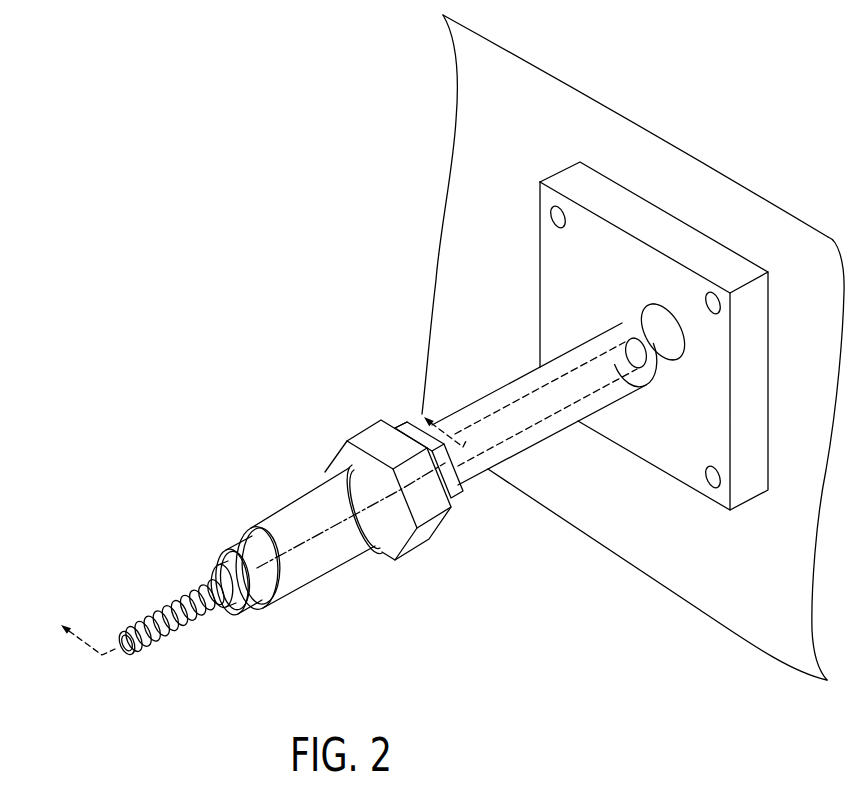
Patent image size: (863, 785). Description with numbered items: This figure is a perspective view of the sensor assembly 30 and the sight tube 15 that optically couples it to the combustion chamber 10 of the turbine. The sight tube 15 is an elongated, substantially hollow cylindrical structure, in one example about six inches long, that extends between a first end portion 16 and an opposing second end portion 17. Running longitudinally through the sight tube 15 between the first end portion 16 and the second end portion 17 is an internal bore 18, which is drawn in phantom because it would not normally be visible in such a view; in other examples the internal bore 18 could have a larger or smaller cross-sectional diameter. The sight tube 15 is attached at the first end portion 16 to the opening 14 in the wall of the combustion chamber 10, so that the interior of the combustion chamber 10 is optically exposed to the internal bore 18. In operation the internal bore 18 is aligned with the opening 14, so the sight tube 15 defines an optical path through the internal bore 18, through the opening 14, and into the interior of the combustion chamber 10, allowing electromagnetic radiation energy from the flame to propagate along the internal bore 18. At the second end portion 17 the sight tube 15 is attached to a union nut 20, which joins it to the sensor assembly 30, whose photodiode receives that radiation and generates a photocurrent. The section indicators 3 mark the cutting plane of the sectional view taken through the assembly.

The combustion chamber 10 is at (660, 176).
The opening 14 is at (670, 310).
The sight tube 15 is at (512, 392).
The first end portion 16 is at (622, 322).
The second end portion 17 is at (462, 485).
The internal bore 18 is at (537, 433).
The union nut 20 is at (420, 550).
The sensor assembly 30 is at (248, 532).
The section line 3- 3 is at (254, 523).